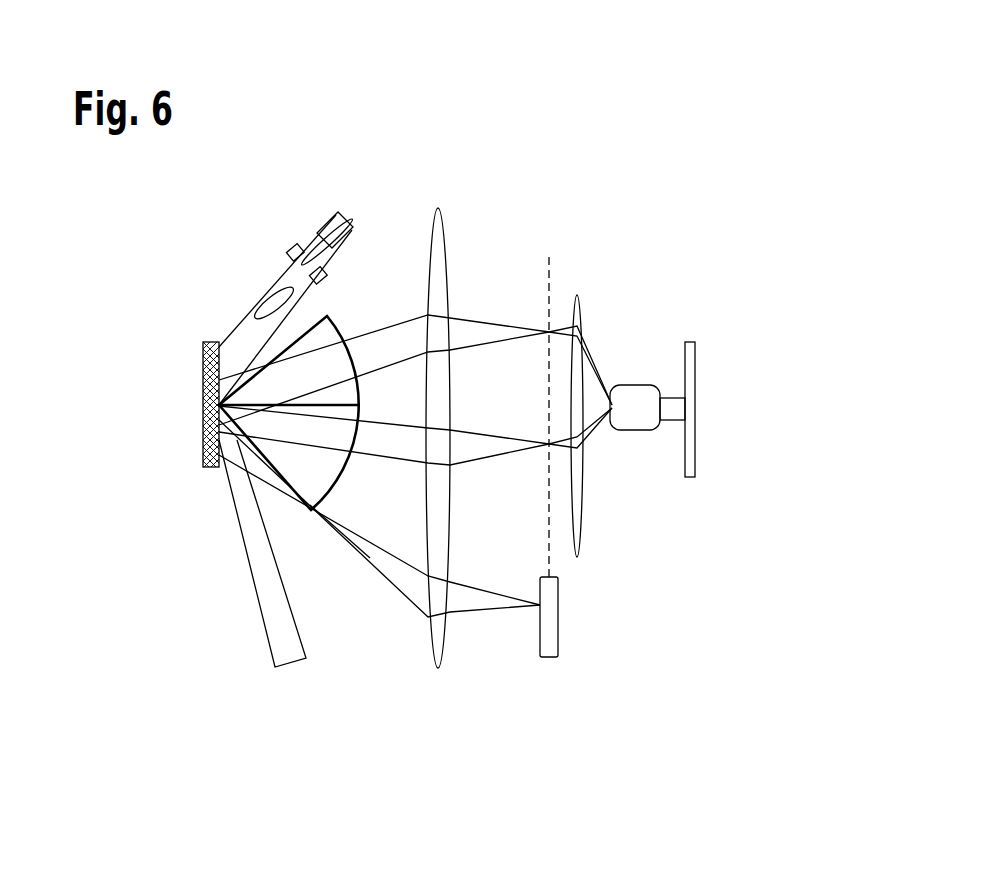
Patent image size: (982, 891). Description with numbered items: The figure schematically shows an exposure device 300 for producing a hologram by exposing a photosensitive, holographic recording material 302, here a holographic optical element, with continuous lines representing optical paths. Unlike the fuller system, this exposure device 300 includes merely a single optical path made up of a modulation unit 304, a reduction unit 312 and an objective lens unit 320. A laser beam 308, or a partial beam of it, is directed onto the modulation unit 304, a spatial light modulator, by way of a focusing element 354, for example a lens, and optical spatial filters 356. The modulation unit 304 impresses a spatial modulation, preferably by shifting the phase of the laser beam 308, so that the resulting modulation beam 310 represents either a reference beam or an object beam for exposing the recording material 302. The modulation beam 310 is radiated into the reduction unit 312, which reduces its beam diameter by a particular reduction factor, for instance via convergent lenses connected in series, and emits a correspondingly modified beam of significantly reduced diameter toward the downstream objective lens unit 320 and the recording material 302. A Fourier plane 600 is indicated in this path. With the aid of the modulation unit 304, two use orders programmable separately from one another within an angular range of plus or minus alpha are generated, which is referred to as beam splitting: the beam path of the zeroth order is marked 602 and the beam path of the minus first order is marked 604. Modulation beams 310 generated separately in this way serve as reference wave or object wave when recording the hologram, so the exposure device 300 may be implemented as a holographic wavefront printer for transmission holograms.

The exposure device 300 is at (664, 208).
The holographic recording material 302 is at (688, 370).
The modulation unit 304 is at (204, 398).
The laser beam 308 is at (345, 225).
The modulation beam 310 is at (308, 630).
The reduction unit 312 is at (565, 672).
The objective lens unit 320 is at (632, 394).
The focusing element 354 is at (258, 292).
The optical spatial filter 356 is at (288, 247).
The Fourier plane 600 is at (549, 258).
The beam path of the zeroth order 602 is at (370, 558).
The beam path of the minus first order 604 is at (290, 647).